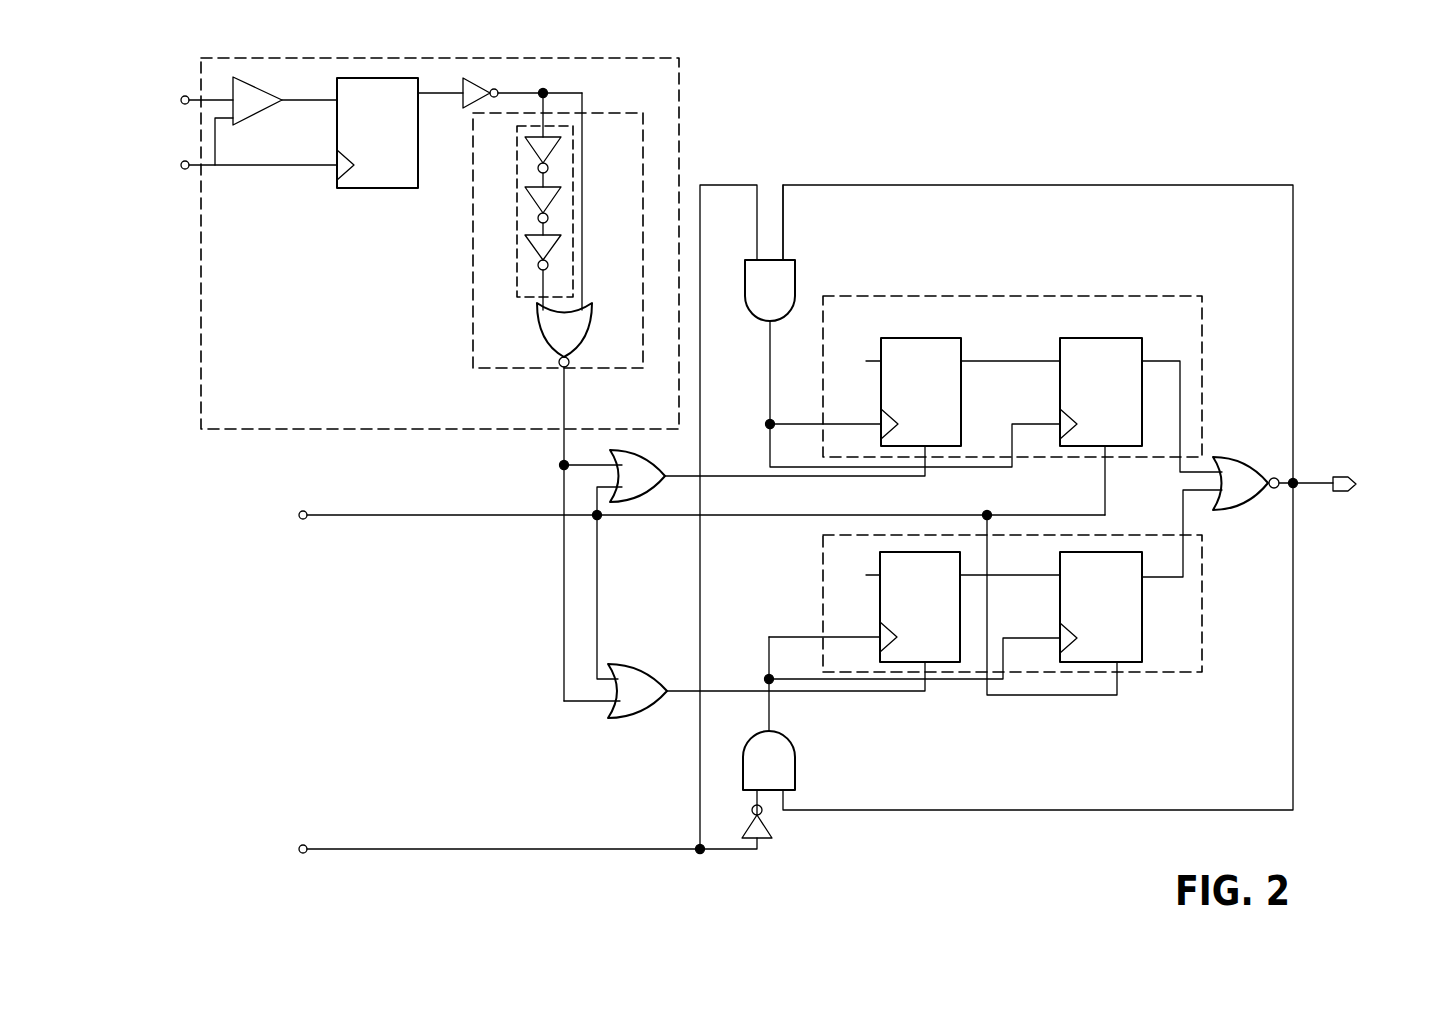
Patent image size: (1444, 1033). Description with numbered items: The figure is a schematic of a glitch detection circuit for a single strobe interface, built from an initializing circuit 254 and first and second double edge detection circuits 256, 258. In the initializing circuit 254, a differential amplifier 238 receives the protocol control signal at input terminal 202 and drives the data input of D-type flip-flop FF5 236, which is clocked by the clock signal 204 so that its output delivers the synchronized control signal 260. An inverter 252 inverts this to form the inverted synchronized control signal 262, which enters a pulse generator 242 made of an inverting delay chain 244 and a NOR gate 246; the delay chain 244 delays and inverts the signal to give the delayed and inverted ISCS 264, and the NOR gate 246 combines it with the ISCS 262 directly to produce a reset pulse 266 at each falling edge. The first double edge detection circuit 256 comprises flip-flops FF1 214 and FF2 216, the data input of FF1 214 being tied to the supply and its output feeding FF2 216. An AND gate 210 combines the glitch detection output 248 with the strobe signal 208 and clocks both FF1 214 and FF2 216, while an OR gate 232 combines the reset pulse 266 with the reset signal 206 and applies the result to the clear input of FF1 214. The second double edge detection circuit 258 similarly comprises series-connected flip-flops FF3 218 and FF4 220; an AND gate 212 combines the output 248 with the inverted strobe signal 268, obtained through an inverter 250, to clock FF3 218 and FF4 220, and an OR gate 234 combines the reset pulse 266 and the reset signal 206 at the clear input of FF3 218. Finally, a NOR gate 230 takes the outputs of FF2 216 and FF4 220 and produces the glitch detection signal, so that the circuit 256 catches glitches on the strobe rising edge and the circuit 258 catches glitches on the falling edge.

The input terminal for protocol control signal 202 is at (185, 96).
The clock signal 204 is at (185, 169).
The reset signal 206 is at (306, 511).
The strobe signal 208 is at (306, 846).
The AND gate 210 is at (795, 288).
The AND gate 212 is at (793, 730).
The D-type flip-flop FF1 214 is at (899, 338).
The D-type flip-flop FF2 216 is at (1085, 338).
The D-type flip-flop FF3 218 is at (880, 606).
The D-type flip-flop FF4 220 is at (1060, 596).
The NOR gate 230 is at (1240, 457).
The OR gate 232 is at (648, 452).
The OR gate 234 is at (647, 667).
The D-type flip-flop FF5 236 is at (372, 78).
The differential amplifier 238 is at (264, 88).
The pulse generator 242 is at (604, 95).
The inverting delay chain 244 is at (573, 199).
The NOR gate 246 is at (537, 341).
The glitch detection circuit output (glitch_out) 248 is at (1339, 495).
The inverter 250 is at (770, 832).
The inverter 252 is at (472, 80).
The initializing circuit 254 is at (679, 68).
The first double edge detection circuit 256 is at (1074, 296).
The second double edge detection circuit 258 is at (1220, 540).
The synchronized control signal 260 is at (432, 96).
The inverted synchronized control signal 262 is at (543, 89).
The delayed and inverted ISCS 264 is at (548, 286).
The reset pulse 266 is at (562, 467).
The inverted strobe signal 268 is at (752, 809).